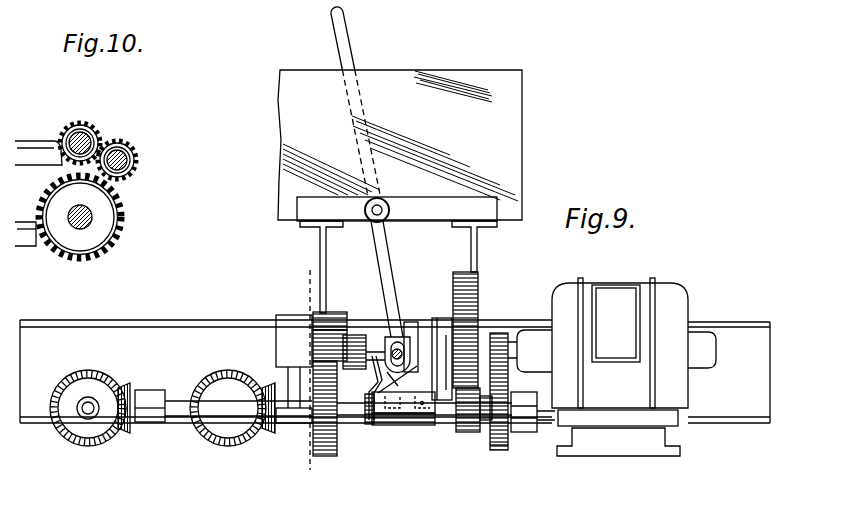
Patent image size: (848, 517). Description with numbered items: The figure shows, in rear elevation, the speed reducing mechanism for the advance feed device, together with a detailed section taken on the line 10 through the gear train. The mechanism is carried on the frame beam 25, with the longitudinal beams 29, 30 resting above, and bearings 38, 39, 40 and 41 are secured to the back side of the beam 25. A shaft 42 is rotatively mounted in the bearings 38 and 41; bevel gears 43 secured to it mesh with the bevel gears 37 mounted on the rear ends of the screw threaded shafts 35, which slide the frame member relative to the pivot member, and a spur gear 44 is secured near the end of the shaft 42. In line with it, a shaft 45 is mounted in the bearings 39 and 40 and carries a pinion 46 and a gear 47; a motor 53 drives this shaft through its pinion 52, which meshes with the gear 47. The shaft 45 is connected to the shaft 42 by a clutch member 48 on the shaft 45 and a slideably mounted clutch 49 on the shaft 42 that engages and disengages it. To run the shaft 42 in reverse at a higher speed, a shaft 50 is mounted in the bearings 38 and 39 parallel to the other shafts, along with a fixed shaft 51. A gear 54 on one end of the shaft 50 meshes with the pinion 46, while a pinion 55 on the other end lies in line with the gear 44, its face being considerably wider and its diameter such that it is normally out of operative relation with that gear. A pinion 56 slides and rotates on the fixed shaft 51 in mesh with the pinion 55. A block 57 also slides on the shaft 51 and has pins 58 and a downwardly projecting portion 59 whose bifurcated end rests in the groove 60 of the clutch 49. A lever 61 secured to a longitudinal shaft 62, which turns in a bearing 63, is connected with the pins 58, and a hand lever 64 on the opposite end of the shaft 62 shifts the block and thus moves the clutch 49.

In FIG. 9, the section line 10 is at (303, 262).
In FIG. 9, the beam 25 is at (395, 370).
In FIG. 9, the longitudinal beam 29 is at (319, 241).
In FIG. 9, the longitudinal beam 30 is at (478, 247).
In FIG. 9, the screw threaded shaft 35 is at (82, 404).
In FIG. 9, the bevel gear 37 is at (88, 372).
In FIG. 9, the bearing 38 is at (290, 353).
In FIG. 10, the bearing 39 is at (26, 247).
In FIG. 9, the bearing 39 is at (440, 318).
In FIG. 9, the bearing 40 is at (527, 432).
In FIG. 9, the bearing 41 is at (148, 424).
In FIG. 10, the shaft 42 is at (86, 226).
In FIG. 9, the shaft 42 is at (174, 402).
In FIG. 9, the bevel gear 43 is at (128, 388).
In FIG. 10, the spur gear 44 is at (117, 220).
In FIG. 9, the spur gear 44 is at (322, 458).
In FIG. 9, the shaft 45 is at (489, 422).
In FIG. 9, the pinion 46 is at (462, 431).
In FIG. 9, the gear 47 is at (497, 452).
In FIG. 9, the clutch member 48 is at (410, 428).
In FIG. 9, the clutch 49 is at (378, 430).
In FIG. 10, the shaft 50 is at (70, 130).
In FIG. 9, the shaft 50 is at (350, 330).
In FIG. 10, the fixed shaft 51 is at (135, 166).
In FIG. 9, the fixed shaft 51 is at (422, 368).
In FIG. 9, the pinion 52 is at (500, 333).
In FIG. 9, the motor 53 is at (612, 367).
In FIG. 9, the gear 54 is at (480, 285).
In FIG. 10, the pinion 55 is at (92, 129).
In FIG. 9, the pinion 55 is at (332, 314).
In FIG. 10, the pinion 56 is at (136, 152).
In FIG. 9, the pinion 56 is at (355, 370).
In FIG. 9, the block 57 is at (408, 322).
In FIG. 9, the pin 58 is at (395, 348).
In FIG. 9, the downwardly projecting portion 59 is at (397, 382).
In FIG. 9, the groove 60 is at (371, 421).
In FIG. 9, the lever 61 is at (388, 248).
In FIG. 9, the longitudinal shaft 62 is at (384, 204).
In FIG. 9, the bearing 63 is at (397, 209).
In FIG. 9, the hand lever 64 is at (348, 52).